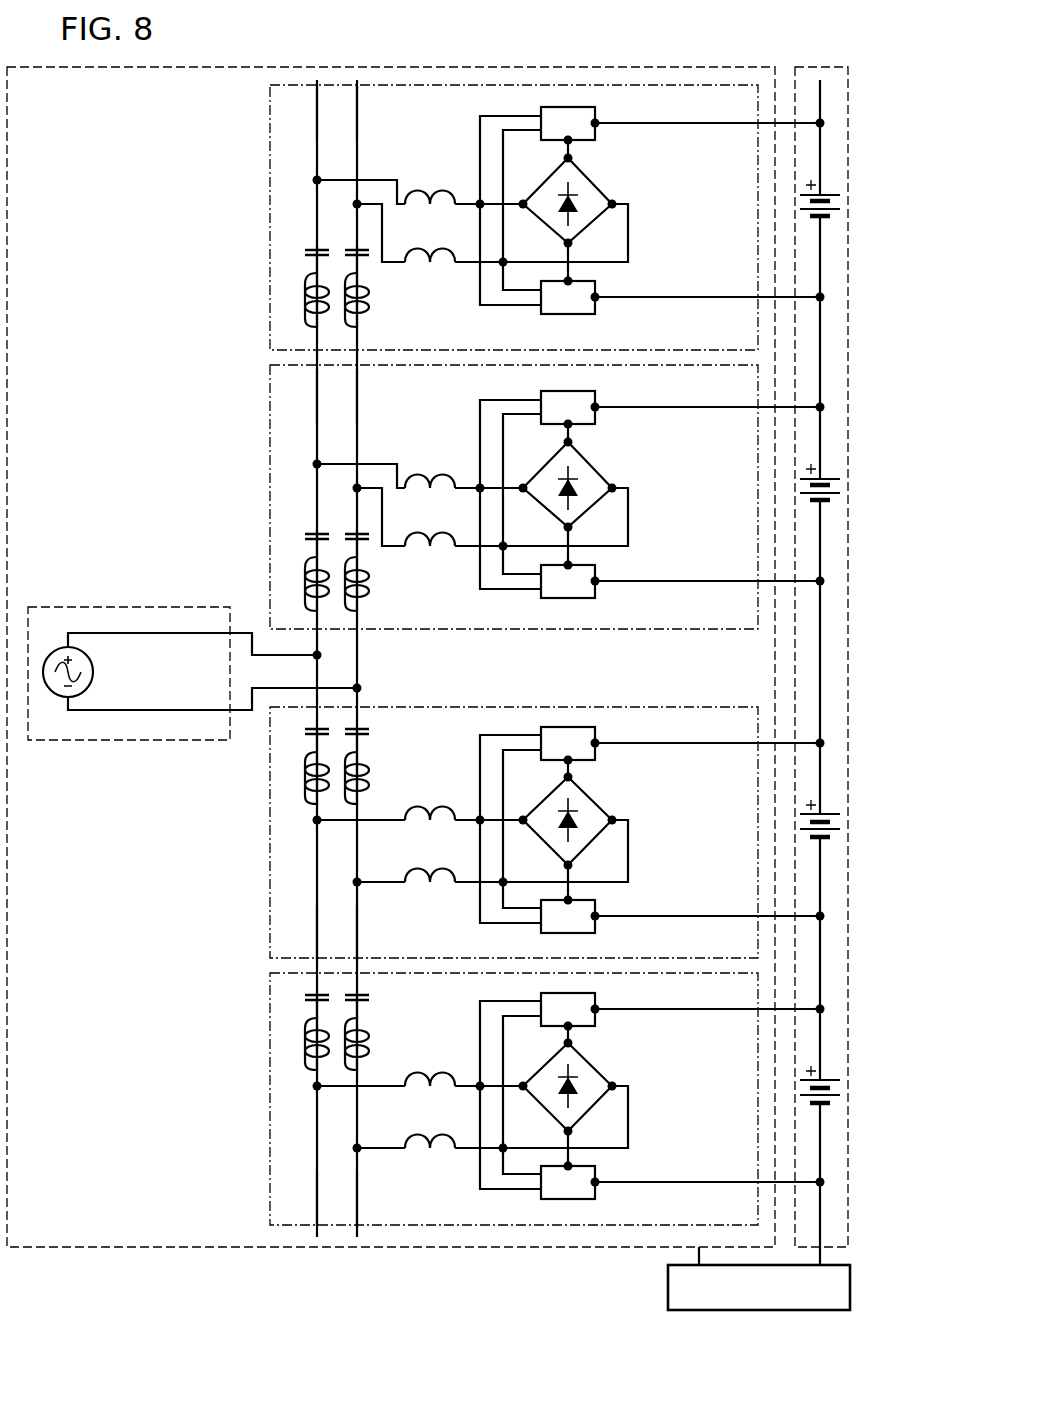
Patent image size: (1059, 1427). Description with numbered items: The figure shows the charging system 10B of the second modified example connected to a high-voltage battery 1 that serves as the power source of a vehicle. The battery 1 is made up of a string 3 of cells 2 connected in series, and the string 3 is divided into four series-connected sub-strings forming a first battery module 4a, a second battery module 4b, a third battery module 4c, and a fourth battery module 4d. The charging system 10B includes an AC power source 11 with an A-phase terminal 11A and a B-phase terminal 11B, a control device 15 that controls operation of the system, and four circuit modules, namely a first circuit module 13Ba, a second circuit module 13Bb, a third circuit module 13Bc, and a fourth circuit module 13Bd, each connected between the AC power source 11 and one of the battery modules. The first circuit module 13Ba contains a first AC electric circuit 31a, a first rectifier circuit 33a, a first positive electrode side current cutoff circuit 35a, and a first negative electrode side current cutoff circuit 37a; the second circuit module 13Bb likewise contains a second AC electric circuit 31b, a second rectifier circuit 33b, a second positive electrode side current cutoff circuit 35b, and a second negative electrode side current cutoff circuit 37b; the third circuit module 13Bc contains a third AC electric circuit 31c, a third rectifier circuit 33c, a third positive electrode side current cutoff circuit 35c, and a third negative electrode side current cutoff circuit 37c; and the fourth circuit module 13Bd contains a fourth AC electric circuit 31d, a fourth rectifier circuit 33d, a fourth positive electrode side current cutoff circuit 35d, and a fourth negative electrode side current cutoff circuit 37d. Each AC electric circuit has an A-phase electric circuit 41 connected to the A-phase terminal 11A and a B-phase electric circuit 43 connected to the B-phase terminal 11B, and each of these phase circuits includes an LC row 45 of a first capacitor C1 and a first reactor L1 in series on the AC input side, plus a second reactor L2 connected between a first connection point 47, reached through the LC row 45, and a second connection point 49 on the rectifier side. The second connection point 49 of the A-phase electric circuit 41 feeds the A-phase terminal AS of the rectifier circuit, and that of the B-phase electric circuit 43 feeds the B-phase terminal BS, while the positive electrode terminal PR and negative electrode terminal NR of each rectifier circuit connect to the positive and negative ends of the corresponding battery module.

The battery 1 is at (832, 65).
The charging system 10B is at (416, 636).
The cell 2 is at (838, 209).
The string 3 is at (856, 672).
The first battery module 4a is at (868, 201).
The second battery module 4b is at (868, 485).
The third battery module 4c is at (868, 822).
The fourth battery module 4d is at (868, 1088).
The AC power source 11 is at (188, 636).
The A-phase terminal 11A is at (321, 655).
The B-phase terminal 11B is at (361, 688).
The first circuit module 13Ba is at (262, 220).
The second circuit module 13Bb is at (393, 497).
The third circuit module 13Bc is at (393, 832).
The fourth circuit module 13Bd is at (393, 1099).
The control device 15 is at (666, 1291).
The first AC electric circuit 31a is at (198, 83).
The second AC electric circuit 31b is at (223, 395).
The third AC electric circuit 31c is at (198, 905).
The fourth AC electric circuit 31d is at (223, 1198).
The first rectifier circuit 33a is at (636, 195).
The second rectifier circuit 33b is at (636, 479).
The third rectifier circuit 33c is at (636, 816).
The fourth rectifier circuit 33d is at (636, 1082).
The first positive electrode side current cutoff circuit 35a is at (648, 118).
The second positive electrode side current cutoff circuit 35b is at (648, 402).
The third positive electrode side current cutoff circuit 35c is at (648, 738).
The fourth positive electrode side current cutoff circuit 35d is at (648, 1004).
The first negative electrode side current cutoff circuit 37a is at (643, 308).
The second negative electrode side current cutoff circuit 37b is at (643, 592).
The third negative electrode side current cutoff circuit 37c is at (643, 927).
The fourth negative electrode side current cutoff circuit 37d is at (643, 1193).
The A-phase electric circuit 41 is at (261, 658).
The B-phase electric circuit 43 is at (281, 658).
The LC row 45 is at (198, 326).
The first connection point 47 is at (355, 204).
The second connection point 49 is at (501, 260).
The first capacitor C1 is at (304, 258).
The first reactor L1 is at (304, 298).
The second reactor L2 is at (418, 257).
The A-phase terminal AS is at (523, 201).
The positive electrode terminal PR is at (572, 158).
The B-phase terminal BS is at (616, 204).
The negative electrode terminal NR is at (572, 244).